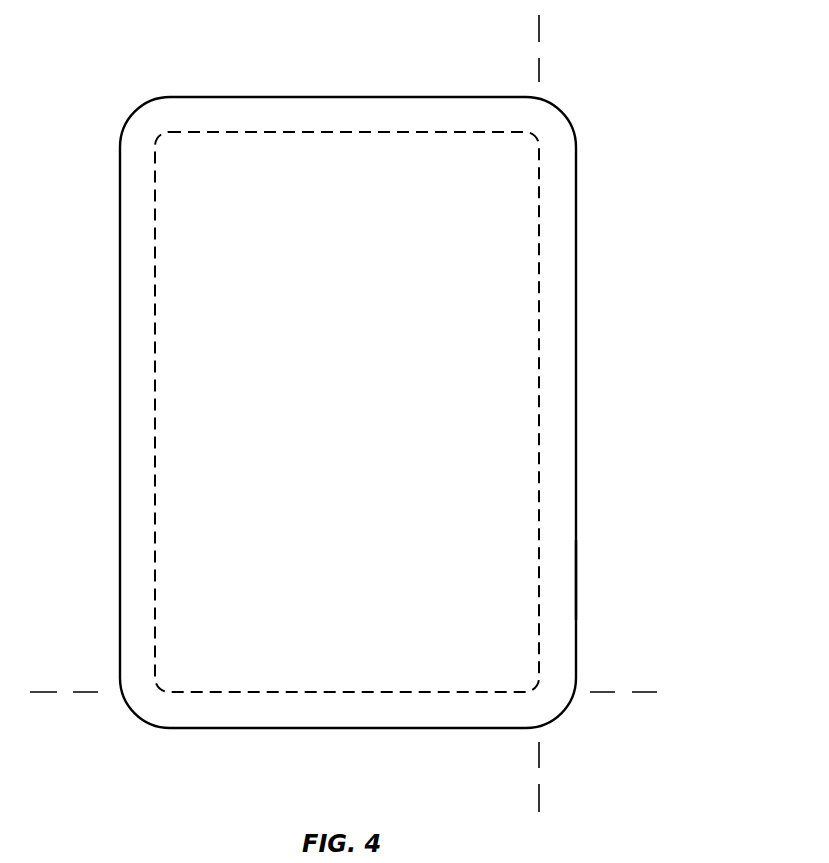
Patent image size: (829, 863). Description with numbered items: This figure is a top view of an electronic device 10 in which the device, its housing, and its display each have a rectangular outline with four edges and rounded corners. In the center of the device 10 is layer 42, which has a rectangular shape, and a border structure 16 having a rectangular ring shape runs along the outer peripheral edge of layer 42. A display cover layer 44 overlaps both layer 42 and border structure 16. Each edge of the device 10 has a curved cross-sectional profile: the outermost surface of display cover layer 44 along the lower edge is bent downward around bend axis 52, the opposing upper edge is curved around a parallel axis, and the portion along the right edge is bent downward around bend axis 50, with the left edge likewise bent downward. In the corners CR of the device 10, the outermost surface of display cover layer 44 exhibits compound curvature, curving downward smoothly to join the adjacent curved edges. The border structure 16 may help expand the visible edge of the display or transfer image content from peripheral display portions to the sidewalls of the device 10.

The electronic device 10 is at (683, 183).
The border structure 16 is at (557, 456).
The layer 42 is at (505, 340).
The display cover layer 44 is at (577, 575).
The bend axis 50 is at (541, 28).
The bend axis 52 is at (50, 690).
The corners CR is at (132, 90).